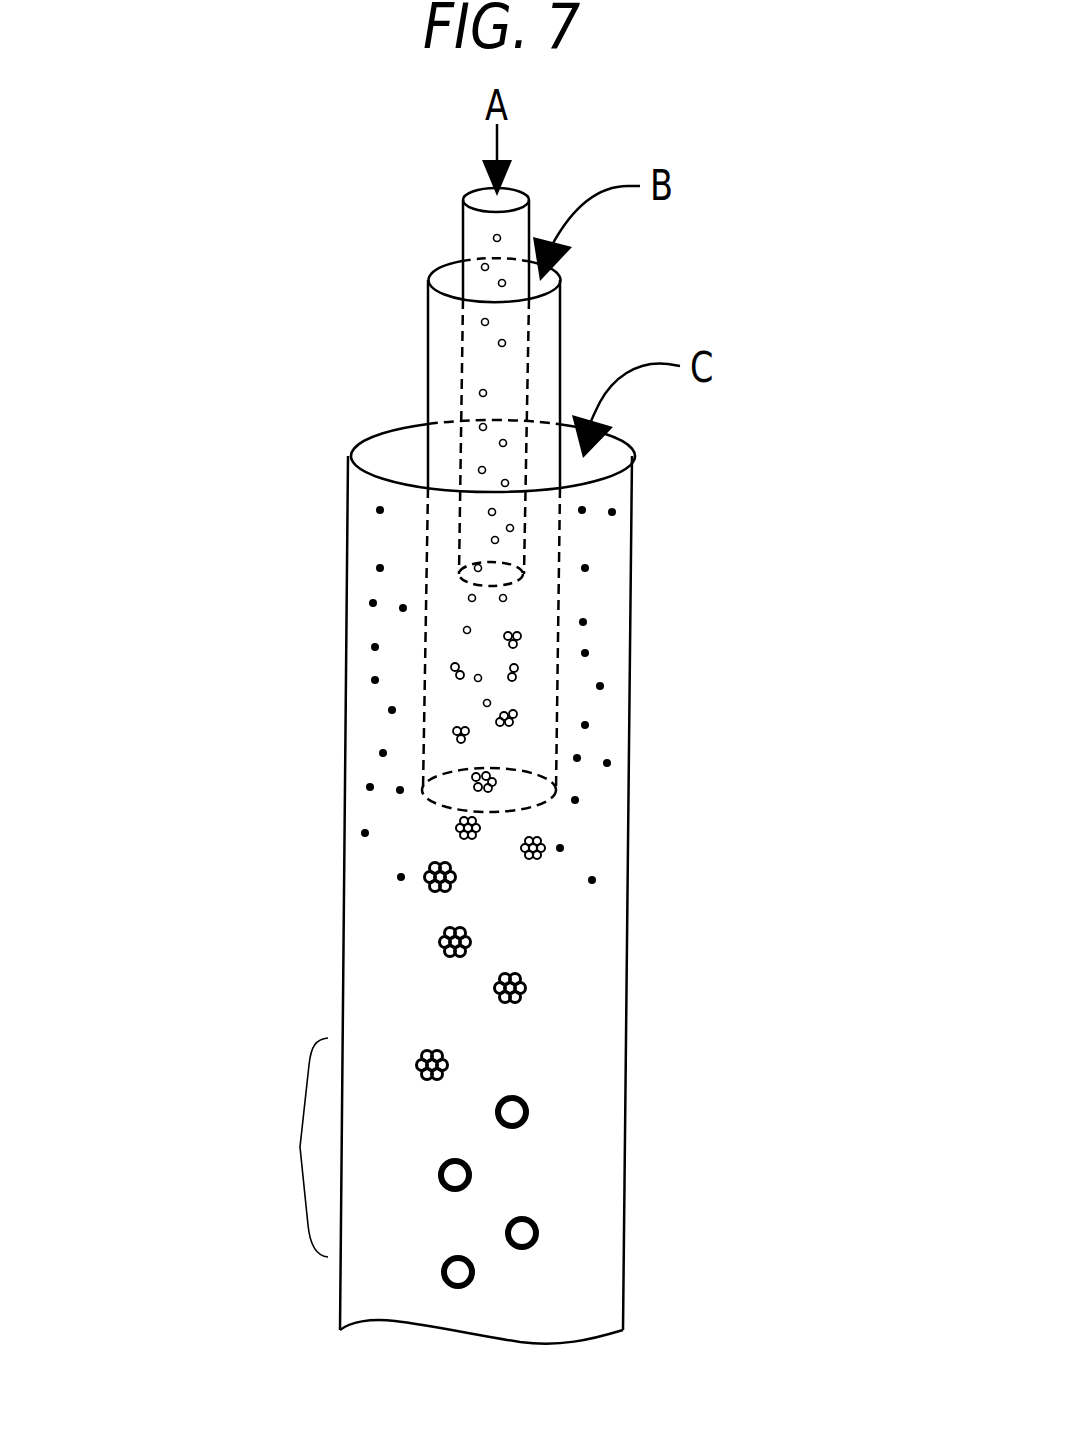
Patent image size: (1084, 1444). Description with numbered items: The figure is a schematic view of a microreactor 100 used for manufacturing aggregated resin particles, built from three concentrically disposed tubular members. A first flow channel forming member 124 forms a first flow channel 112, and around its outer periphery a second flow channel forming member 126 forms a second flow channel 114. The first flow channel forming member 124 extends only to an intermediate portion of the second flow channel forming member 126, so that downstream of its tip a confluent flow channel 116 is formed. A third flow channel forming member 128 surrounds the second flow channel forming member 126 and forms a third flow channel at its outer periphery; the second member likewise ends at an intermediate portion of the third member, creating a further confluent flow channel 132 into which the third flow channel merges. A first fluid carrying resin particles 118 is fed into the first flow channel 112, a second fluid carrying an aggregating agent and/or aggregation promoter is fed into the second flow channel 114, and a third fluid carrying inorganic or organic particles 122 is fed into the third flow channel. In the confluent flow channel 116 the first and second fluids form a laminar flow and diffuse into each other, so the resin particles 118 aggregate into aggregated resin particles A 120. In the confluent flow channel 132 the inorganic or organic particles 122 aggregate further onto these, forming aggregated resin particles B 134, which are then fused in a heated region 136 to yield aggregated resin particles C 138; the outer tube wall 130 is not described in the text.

The microreactor 100 is at (310, 208).
The first flow channel 112 is at (472, 372).
The second flow channel 114 is at (544, 352).
The confluent flow channel 116 is at (525, 613).
The resin particles 118 is at (480, 351).
The aggregated resin particles A 120 is at (458, 827).
The inorganic or organic particles 122 is at (603, 686).
The first flow channel forming member 124 is at (528, 188).
The second flow channel forming member 126 is at (430, 276).
The third flow channel forming member 128 is at (620, 440).
The third tube 130 is at (372, 625).
The confluent flow channel 132 is at (522, 1047).
The aggregated resin particles B 134 is at (530, 985).
The heated region 136 is at (297, 1147).
The aggregated resin particles C 138 is at (545, 1232).